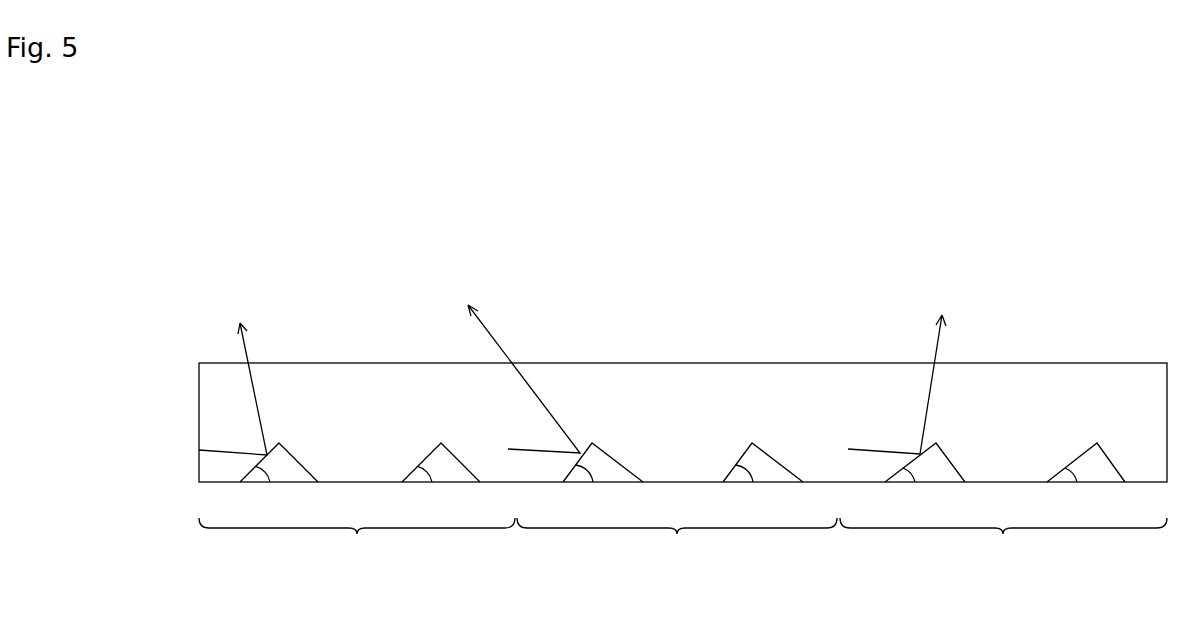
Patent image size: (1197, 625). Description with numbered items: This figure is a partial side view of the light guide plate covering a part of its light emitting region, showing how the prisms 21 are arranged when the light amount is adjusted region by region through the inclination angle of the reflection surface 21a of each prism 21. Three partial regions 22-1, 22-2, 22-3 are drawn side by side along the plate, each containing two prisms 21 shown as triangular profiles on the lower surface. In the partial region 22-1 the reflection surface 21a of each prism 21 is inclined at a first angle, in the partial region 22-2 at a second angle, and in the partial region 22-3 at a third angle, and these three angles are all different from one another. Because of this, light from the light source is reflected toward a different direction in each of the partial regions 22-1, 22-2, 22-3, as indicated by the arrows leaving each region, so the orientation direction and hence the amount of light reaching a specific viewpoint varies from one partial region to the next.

The prism 21 is at (296, 455).
The reflection surface 21a is at (425, 453).
The partial region 22-1 is at (357, 538).
The partial region 22-2 is at (677, 538).
The partial region 22-3 is at (1003, 538).